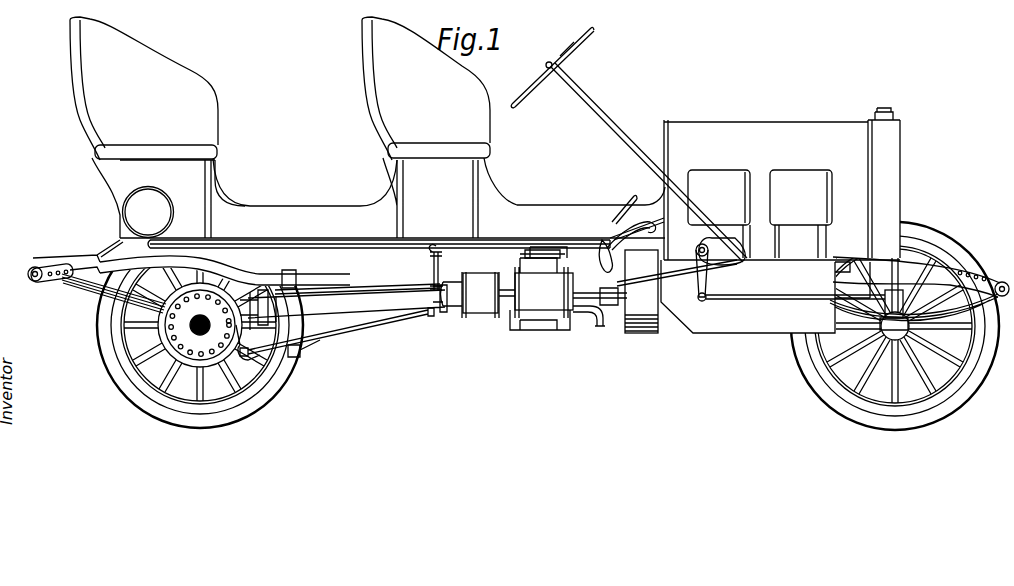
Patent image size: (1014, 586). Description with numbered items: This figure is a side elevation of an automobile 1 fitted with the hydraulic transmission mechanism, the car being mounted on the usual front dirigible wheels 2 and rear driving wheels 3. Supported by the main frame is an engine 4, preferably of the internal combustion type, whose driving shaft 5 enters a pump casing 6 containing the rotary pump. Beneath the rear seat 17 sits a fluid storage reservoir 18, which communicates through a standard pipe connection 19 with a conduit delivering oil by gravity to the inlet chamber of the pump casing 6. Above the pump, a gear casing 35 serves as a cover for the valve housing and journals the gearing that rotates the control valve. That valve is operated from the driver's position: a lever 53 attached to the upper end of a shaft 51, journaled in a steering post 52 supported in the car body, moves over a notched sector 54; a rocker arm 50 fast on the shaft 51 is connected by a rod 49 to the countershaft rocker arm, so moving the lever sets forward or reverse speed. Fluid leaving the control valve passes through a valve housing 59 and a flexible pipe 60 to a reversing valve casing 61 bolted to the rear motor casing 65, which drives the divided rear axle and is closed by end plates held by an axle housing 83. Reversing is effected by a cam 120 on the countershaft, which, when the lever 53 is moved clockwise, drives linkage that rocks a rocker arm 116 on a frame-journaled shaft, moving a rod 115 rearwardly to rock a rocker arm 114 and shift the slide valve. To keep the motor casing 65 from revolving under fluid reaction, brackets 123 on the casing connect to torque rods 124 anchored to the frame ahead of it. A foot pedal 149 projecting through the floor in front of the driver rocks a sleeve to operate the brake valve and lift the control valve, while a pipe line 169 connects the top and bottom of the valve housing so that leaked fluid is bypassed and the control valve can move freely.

The automobile 1 is at (513, 127).
The front dirigible wheels 2 is at (990, 348).
The rear driving wheels 3 is at (113, 379).
The engine 4 is at (760, 214).
The driving shaft 5 is at (620, 306).
The pump casing 6 is at (541, 288).
The rear seat 17 is at (202, 127).
The fluid storage reservoir 18 is at (148, 212).
The standard pipe connection 19 is at (356, 240).
The gear casing 35 is at (534, 252).
The rod 49 is at (651, 279).
The rocker arm 50 is at (735, 258).
The shaft 51 is at (748, 263).
The steering post 52 is at (612, 117).
The lever 53 is at (549, 62).
The notched sector 54 is at (570, 48).
The valve housing 59 is at (474, 295).
The flexible pipe 60 is at (347, 301).
The reversing valve casing 61 is at (300, 357).
The motor casing 65 is at (166, 334).
The axle housing 83 is at (200, 325).
The rocker arm 114 is at (283, 301).
The rod 115 is at (357, 296).
The rocker arm 116 is at (433, 274).
The cam 120 is at (607, 247).
The brackets 123 is at (255, 358).
The torque rods 124 is at (354, 330).
The foot pedal 149 is at (638, 200).
The pipe line 169 is at (592, 328).